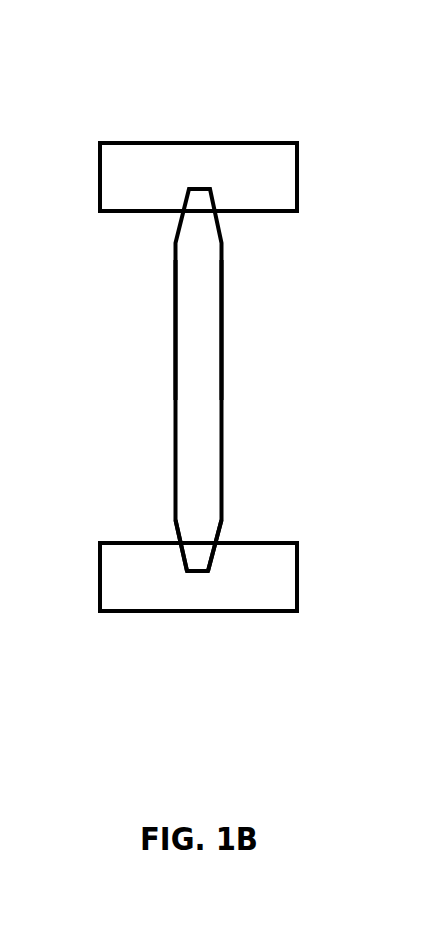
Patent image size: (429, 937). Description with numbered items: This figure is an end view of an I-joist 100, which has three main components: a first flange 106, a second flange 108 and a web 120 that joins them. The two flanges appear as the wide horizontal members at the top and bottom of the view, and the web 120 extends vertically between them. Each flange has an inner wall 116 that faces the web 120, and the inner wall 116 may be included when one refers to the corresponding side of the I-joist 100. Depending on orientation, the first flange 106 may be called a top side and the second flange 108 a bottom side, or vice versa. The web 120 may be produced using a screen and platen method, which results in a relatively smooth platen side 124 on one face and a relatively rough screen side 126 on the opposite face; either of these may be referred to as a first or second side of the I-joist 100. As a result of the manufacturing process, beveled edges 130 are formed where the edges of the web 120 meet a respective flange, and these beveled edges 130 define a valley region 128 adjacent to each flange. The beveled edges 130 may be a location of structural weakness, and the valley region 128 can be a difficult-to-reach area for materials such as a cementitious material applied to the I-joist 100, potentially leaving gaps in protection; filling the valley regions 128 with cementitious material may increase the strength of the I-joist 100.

The I-joist 100 is at (180, 108).
The first flange 106 is at (270, 178).
The second flange 108 is at (288, 590).
The inner wall 116 is at (243, 213).
The web 120 is at (213, 398).
The platen side 124 is at (175, 308).
The screen side 126 is at (222, 331).
The valley region 128 is at (177, 537).
The beveled edges 130 is at (223, 527).